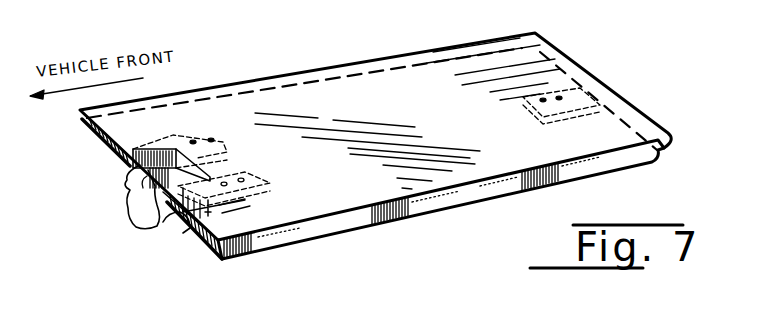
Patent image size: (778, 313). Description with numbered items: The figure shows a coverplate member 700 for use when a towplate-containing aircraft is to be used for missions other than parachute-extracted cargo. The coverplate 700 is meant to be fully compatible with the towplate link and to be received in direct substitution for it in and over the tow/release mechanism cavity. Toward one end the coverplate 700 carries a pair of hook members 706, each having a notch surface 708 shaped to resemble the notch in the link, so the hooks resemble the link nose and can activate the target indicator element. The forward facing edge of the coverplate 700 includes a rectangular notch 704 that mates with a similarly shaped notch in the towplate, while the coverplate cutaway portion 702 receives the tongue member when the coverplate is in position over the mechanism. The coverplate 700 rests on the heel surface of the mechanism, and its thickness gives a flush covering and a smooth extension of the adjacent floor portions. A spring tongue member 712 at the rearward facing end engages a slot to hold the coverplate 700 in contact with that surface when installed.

The coverplate member 700 is at (406, 213).
The coverplate cutaway portion 702 is at (205, 168).
The rectangular notch 704 is at (123, 163).
The hook members 706 is at (160, 223).
The notch surface 708 is at (123, 150).
The spring tongue member 712 is at (590, 101).